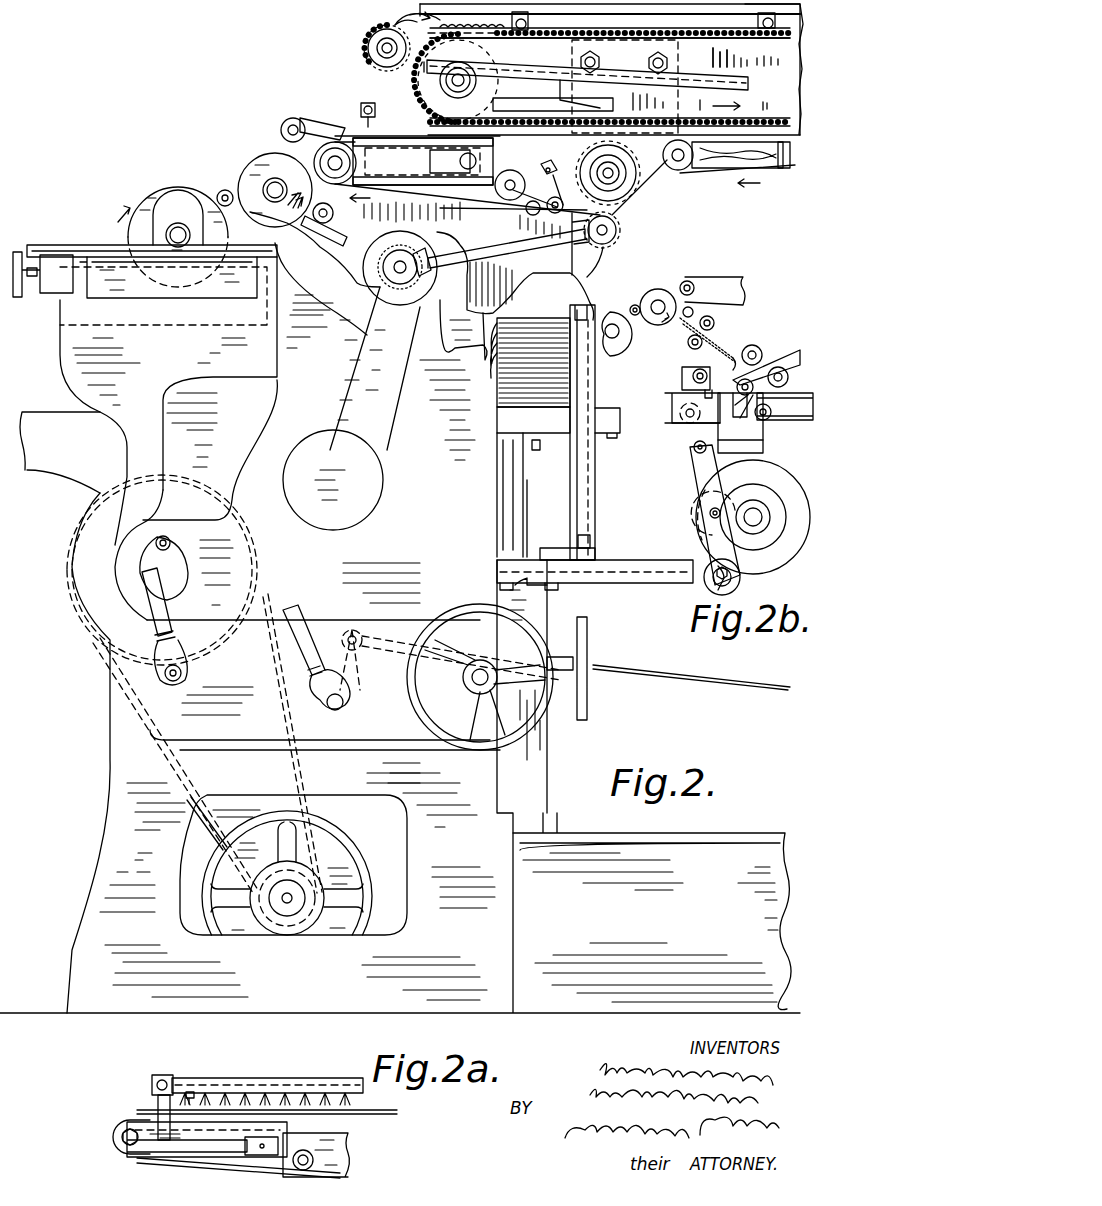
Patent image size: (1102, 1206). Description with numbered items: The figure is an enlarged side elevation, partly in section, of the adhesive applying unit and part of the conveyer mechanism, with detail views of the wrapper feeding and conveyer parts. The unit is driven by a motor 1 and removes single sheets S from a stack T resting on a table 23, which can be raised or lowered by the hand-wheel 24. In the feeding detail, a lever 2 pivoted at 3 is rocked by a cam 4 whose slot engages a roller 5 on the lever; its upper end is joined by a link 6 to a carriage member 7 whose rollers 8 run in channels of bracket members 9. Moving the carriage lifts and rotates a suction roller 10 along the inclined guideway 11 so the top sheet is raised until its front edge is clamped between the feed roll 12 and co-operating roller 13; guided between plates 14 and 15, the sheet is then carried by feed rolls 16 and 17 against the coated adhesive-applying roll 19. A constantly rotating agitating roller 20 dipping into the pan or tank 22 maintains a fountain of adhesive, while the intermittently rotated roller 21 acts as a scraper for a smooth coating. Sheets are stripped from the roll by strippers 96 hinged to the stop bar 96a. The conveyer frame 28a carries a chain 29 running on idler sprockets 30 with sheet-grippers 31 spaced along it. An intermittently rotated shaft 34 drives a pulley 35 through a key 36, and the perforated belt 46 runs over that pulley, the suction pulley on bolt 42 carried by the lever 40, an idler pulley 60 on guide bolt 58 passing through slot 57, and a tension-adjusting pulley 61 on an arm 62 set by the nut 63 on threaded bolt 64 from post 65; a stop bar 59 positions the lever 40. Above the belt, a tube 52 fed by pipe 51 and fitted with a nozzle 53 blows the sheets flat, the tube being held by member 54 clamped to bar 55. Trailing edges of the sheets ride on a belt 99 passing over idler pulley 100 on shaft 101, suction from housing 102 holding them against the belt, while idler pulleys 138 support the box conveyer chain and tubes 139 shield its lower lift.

In FIG. 2, the motor 1 is at (356, 854).
In FIG. 2B, the lever 2 is at (703, 465).
In FIG. 2B, the pivot 3 is at (710, 586).
In FIG. 2B, the cam 4 is at (770, 483).
In FIG. 2B, the roller 5 is at (706, 515).
In FIG. 2B, the link 6 is at (720, 438).
In FIG. 2B, the carriage member 7 is at (762, 440).
In FIG. 2B, the rollers 8 is at (670, 402).
In FIG. 2B, the bracket members 9 is at (668, 426).
In FIG. 2B, the suction roller 10 is at (756, 372).
In FIG. 2B, the inclined guideway 11 is at (777, 391).
In FIG. 2B, the feed roll 12 is at (755, 348).
In FIG. 2B, the co-operating roller 13 is at (708, 381).
In FIG. 2B, the plate 14 is at (712, 338).
In FIG. 2B, the plate 15 is at (728, 365).
In FIG. 2B, the feed roll 16 is at (718, 314).
In FIG. 2B, the feed roll 17 is at (686, 342).
In FIG. 2, the adhesive-applying roll 19 is at (254, 154).
In FIG. 2B, the adhesive-applying roll 19 is at (658, 300).
In FIG. 2, the agitating roller 20 is at (157, 198).
In FIG. 2B, the agitating roller 20 is at (620, 353).
In FIG. 2, the scraper roller 21 is at (222, 190).
In FIG. 2B, the scraper roller 21 is at (634, 308).
In FIG. 2, the pan or tank 22 is at (102, 245).
In FIG. 2, the table 23 is at (543, 440).
In FIG. 2, the hand-wheel 24 is at (546, 696).
In FIG. 2, the conveyer frame 28a is at (388, 17).
In FIG. 2, the chain 29 is at (772, 69).
In FIG. 2, the idler sprocket 30 is at (500, 44).
In FIG. 2, the sheet-gripper 31 is at (562, 100).
In FIG. 2, the shaft 34 is at (620, 230).
In FIG. 2, the pulley 35 is at (631, 180).
In FIG. 2, the key 36 is at (625, 86).
In FIG. 2A, the lever 40 is at (346, 1158).
In FIG. 2A, the bolt 42 is at (120, 1138).
In FIG. 2, the belt 46 is at (340, 142).
In FIG. 2A, the belt 46 is at (140, 1156).
In FIG. 2A, the pipe 51 is at (152, 1084).
In FIG. 2A, the tube 52 is at (254, 1074).
In FIG. 2A, the nozzle 53 is at (188, 1096).
In FIG. 2A, the member 54 is at (138, 1108).
In FIG. 2A, the bar 55 is at (198, 1148).
In FIG. 2, the slot 57 is at (458, 80).
In FIG. 2, the guide bolt 58 is at (525, 210).
In FIG. 2, the stop bar 59 is at (497, 193).
In FIG. 2, the idler pulley 60 is at (530, 210).
In FIG. 2A, the idler pulley 60 is at (294, 1160).
In FIG. 2, the tension-adjusting pulley 61 is at (558, 213).
In FIG. 2, the arm 62 is at (555, 182).
In FIG. 2, the nut 63 is at (508, 244).
In FIG. 2, the threaded bolt 64 is at (490, 230).
In FIG. 2, the post 65 is at (565, 145).
In FIG. 2, the stripper 96 is at (306, 116).
In FIG. 2, the stop bar 96a is at (290, 118).
In FIG. 2, the belt 99 is at (735, 184).
In FIG. 2, the idler pulley 100 is at (676, 184).
In FIG. 2, the shaft 101 is at (678, 170).
In FIG. 2, the housing 102 is at (768, 170).
In FIG. 2, the idler pulley 138 is at (368, 60).
In FIG. 2, the tube 139 is at (706, 80).
In FIG. 2, the sheet S is at (368, 101).
In FIG. 2, the stack T is at (540, 360).